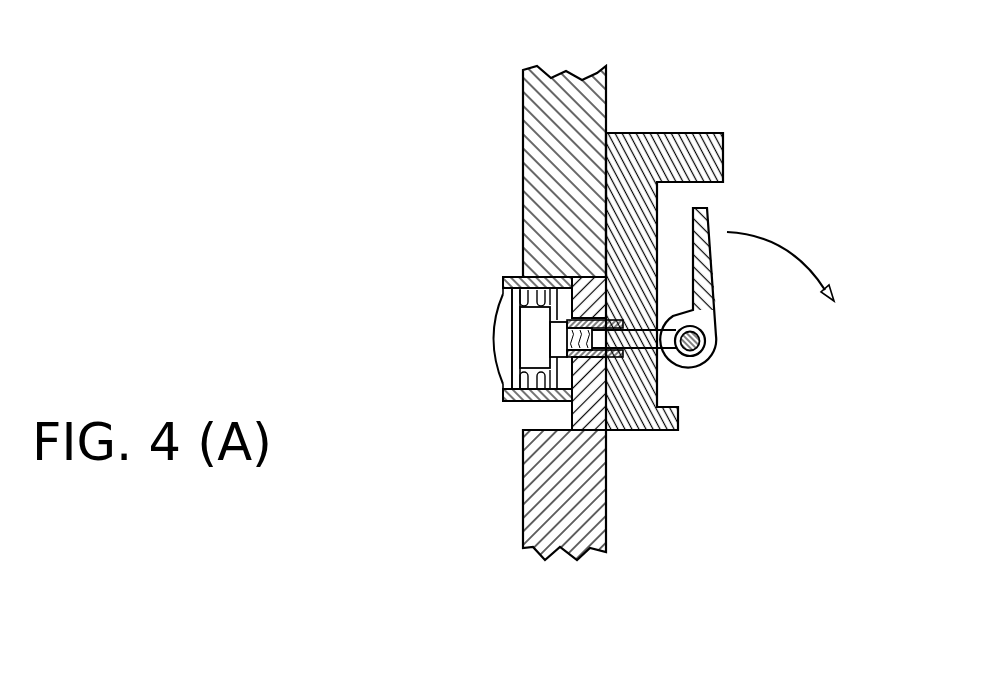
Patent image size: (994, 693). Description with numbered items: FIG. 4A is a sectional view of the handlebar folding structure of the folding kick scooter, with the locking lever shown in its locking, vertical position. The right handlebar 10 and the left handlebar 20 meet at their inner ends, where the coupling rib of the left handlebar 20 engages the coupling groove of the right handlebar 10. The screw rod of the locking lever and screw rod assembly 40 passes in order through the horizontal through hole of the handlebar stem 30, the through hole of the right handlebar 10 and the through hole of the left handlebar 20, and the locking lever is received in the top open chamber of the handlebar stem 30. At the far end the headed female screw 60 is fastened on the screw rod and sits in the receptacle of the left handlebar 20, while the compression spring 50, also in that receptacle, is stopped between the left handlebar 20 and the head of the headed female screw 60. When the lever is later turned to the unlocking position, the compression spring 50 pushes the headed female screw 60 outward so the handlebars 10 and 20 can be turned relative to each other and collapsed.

The right handlebar 10 is at (533, 478).
The left handlebar 20 is at (537, 157).
The handlebar stem 30 is at (673, 133).
The locking lever and screw rod assembly 40 is at (707, 280).
The compression spring 50 is at (505, 278).
The headed female screw 60 is at (503, 335).